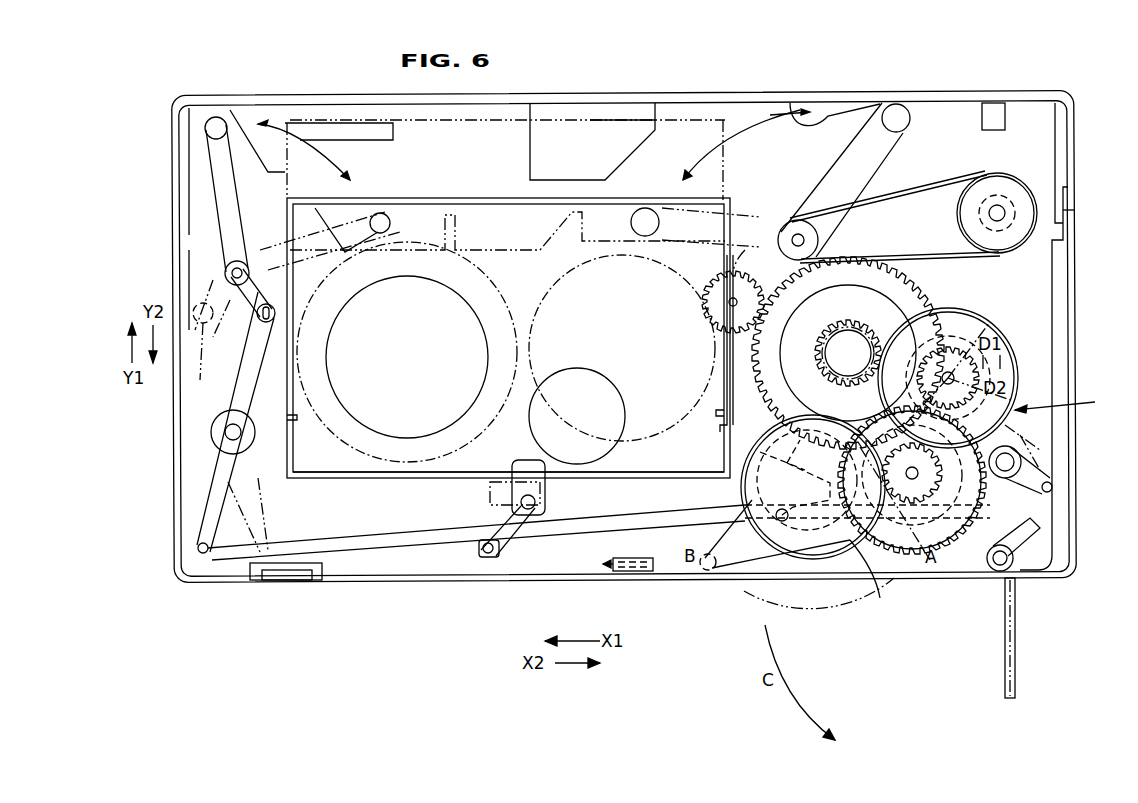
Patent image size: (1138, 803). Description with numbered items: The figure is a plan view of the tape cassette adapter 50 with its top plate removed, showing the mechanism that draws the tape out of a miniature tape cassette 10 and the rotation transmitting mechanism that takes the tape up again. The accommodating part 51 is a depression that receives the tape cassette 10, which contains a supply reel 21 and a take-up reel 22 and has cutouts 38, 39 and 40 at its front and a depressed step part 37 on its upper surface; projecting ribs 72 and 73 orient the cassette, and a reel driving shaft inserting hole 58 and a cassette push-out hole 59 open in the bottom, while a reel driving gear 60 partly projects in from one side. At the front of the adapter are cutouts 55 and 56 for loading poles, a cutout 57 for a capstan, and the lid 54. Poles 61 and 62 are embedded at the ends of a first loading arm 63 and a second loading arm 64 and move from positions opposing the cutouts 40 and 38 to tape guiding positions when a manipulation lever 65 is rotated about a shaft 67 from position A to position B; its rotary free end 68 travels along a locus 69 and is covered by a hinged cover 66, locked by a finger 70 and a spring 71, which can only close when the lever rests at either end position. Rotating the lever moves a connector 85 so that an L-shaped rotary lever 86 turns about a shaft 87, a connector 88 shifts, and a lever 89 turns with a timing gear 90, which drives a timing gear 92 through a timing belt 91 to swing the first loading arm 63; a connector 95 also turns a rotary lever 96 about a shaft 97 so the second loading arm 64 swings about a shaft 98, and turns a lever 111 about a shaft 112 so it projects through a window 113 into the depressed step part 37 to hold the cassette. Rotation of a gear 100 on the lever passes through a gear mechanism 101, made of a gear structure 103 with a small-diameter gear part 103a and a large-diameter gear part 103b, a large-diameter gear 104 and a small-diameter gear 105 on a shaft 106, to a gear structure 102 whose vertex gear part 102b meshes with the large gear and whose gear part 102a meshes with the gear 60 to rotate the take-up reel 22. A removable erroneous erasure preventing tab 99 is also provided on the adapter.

The tape cassette 10 is at (652, 468).
The supply reel 21 is at (510, 410).
The take-up reel 22 is at (668, 430).
The depressed step part 37 is at (522, 468).
The cutout 38 is at (420, 225).
The cutout 39 is at (505, 223).
The cutout 40 is at (610, 225).
The tape cassette adapter 50 is at (986, 66).
The accommodating part 51 is at (305, 468).
The lid 54 is at (545, 103).
The cutout 55 is at (322, 118).
The cutout 56 is at (606, 118).
The cutout 57 is at (830, 105).
The reel driving shaft inserting hole 58 is at (388, 428).
The cassette push-out hole 59 is at (621, 400).
The reel driving gear 60 is at (703, 300).
The pole 61 is at (897, 104).
The pole 62 is at (216, 117).
The first loading arm 63 is at (832, 178).
The second loading arm 64 is at (215, 178).
The manipulation lever 65 is at (736, 566).
The cover 66 is at (1018, 640).
The shaft 67 is at (797, 478).
The rotary free end 68 is at (700, 572).
The locus 69 is at (860, 608).
The finger 70 is at (612, 563).
The spring 71 is at (645, 575).
The projecting rib 72 is at (712, 412).
The projecting rib 73 is at (300, 420).
The connector 85 is at (822, 556).
The L-shaped rotary lever 86 is at (1040, 522).
The shaft 87 is at (1021, 462).
The connector 88 is at (1066, 372).
The lever 89 is at (1063, 200).
The timing gear 90 is at (987, 186).
The timing belt 91 is at (895, 217).
The timing gear 92 is at (787, 226).
The connector 95 is at (425, 548).
The rotary lever 96 is at (197, 508).
The shaft 97 is at (211, 432).
The shaft 98 is at (225, 273).
The erroneous erasure preventing tab 99 is at (286, 582).
The gear 100 is at (877, 580).
The gear mechanism 101 is at (1067, 400).
The gear structure 102 is at (915, 288).
The gear part 102a is at (777, 268).
The vertex gear part 102b is at (845, 323).
The gear structure 103 is at (975, 548).
The small-diameter gear part 103a is at (988, 463).
The large-diameter gear part 103b is at (1006, 518).
The large-diameter gear 104 is at (985, 322).
The small-diameter gear 105 is at (940, 370).
The shaft 106 is at (942, 378).
The lever 111 is at (547, 490).
The shaft 112 is at (527, 512).
The window 113 is at (490, 492).